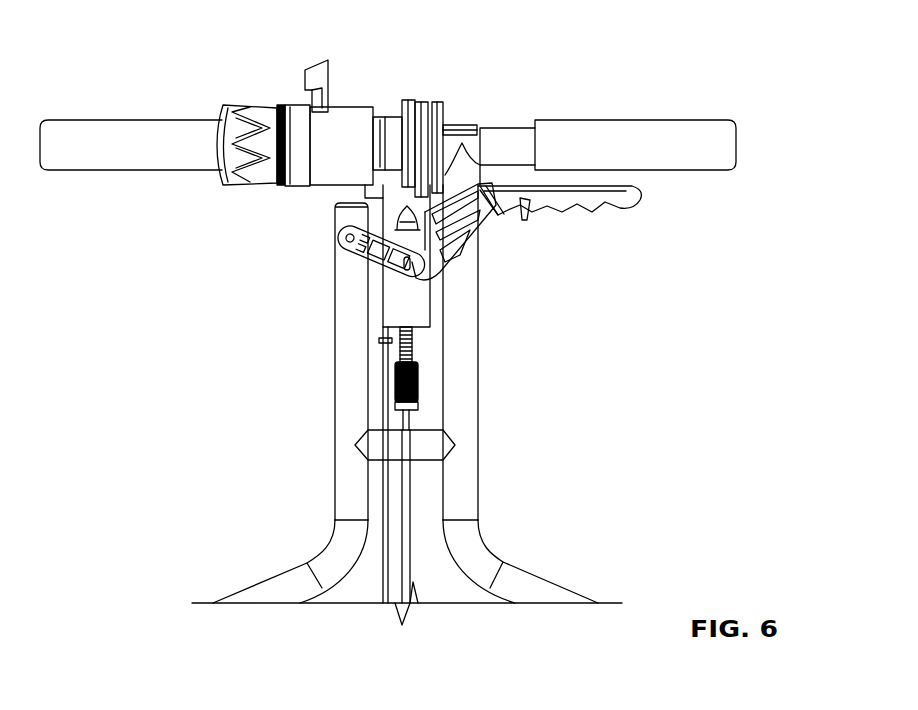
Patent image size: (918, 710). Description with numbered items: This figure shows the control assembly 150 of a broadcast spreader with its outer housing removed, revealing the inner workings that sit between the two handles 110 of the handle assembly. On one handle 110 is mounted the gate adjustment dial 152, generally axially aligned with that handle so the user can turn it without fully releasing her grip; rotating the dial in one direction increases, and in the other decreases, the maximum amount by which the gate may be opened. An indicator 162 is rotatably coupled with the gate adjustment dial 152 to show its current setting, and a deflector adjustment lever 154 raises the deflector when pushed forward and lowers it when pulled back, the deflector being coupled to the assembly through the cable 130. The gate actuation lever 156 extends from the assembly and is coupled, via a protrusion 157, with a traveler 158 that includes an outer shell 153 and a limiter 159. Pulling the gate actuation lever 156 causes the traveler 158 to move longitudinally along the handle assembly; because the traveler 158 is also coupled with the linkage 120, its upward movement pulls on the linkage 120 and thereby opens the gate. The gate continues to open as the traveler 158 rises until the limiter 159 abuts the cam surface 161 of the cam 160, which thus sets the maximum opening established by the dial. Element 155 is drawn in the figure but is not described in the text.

The handles 110 is at (92, 172).
The linkage 120 is at (410, 568).
The cable 130 is at (383, 508).
The control assembly 150 is at (203, 349).
The gate adjustment dial 152 is at (237, 188).
The outer shell 153 is at (392, 307).
The deflector adjustment lever 154 is at (305, 84).
The housing 155 is at (320, 188).
The gate actuation lever 156 is at (600, 210).
The protrusion 157 is at (412, 280).
The traveler 158 is at (430, 315).
The limiter 159 is at (383, 200).
The cam 160 is at (433, 100).
The cam surface 161 is at (405, 102).
The indicator 162 is at (288, 188).